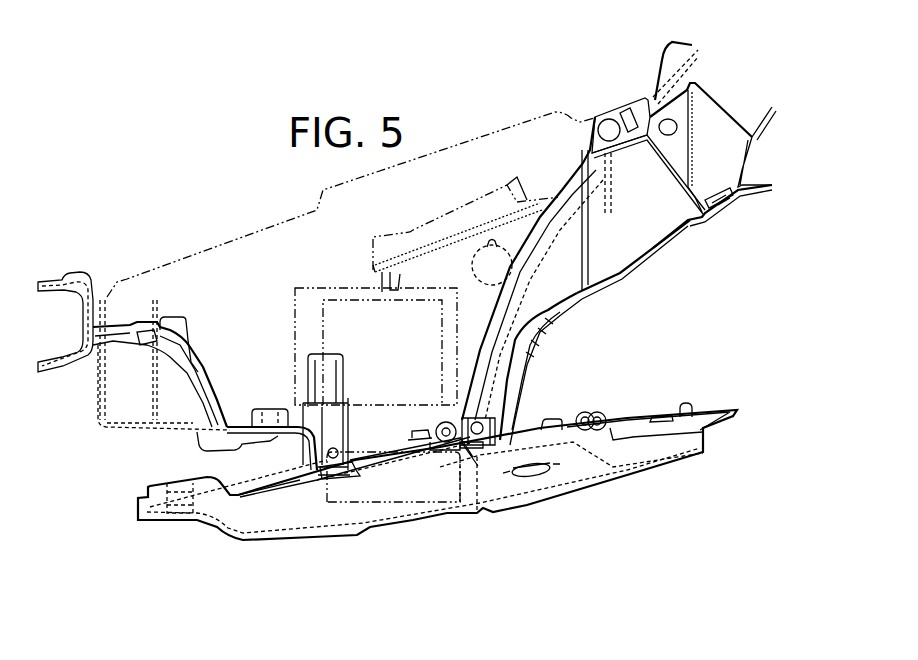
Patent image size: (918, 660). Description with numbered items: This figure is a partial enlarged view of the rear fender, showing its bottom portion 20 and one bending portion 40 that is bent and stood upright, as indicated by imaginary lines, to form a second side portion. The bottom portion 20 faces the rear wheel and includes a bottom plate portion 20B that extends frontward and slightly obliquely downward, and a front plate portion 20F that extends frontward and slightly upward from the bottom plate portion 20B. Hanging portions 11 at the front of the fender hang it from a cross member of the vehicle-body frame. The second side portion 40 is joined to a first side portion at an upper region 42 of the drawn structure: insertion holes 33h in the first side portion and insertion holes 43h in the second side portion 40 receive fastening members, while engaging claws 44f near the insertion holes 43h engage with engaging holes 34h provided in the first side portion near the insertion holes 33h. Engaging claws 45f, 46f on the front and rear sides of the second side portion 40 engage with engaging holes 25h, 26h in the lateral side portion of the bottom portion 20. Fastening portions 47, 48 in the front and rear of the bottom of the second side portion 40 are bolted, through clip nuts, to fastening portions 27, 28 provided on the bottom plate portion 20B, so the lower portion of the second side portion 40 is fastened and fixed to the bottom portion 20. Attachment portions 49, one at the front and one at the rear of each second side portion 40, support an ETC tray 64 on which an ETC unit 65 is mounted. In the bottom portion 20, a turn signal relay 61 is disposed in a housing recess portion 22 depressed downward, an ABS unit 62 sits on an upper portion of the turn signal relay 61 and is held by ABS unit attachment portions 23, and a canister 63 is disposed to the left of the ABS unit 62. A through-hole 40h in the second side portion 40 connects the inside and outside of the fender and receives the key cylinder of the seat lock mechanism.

The hanging portion 11 is at (56, 262).
The bottom portion 20 is at (572, 200).
The front plate portion 20F is at (90, 424).
The bottom plate portion 20B is at (410, 440).
The housing recess portion 22 is at (317, 508).
The ABS unit attachment portion 23 is at (262, 409).
The engaging hole 25h is at (149, 328).
The engaging hole 26h is at (540, 340).
The fastening portion 27 is at (335, 447).
The fastening portion 28 is at (480, 416).
The insertion hole 33h is at (608, 120).
The engaging hole 34h is at (628, 108).
The bending portion 40 is at (218, 244).
The through-hole 40h is at (542, 468).
The gusset plate 42 is at (597, 117).
The insertion hole 43h is at (658, 417).
The engaging claw 44f is at (688, 403).
The engaging claw 45f is at (167, 483).
The engaging claw 46f is at (553, 418).
The fastening portion 47 is at (357, 470).
The fastening portion 48 is at (478, 456).
The attachment portion 49 is at (443, 420).
The turn signal relay 61 is at (348, 508).
The ABS unit 62 is at (320, 310).
The canister 63 is at (335, 287).
The ETC tray 64 is at (528, 203).
The ETC unit 65 is at (428, 220).